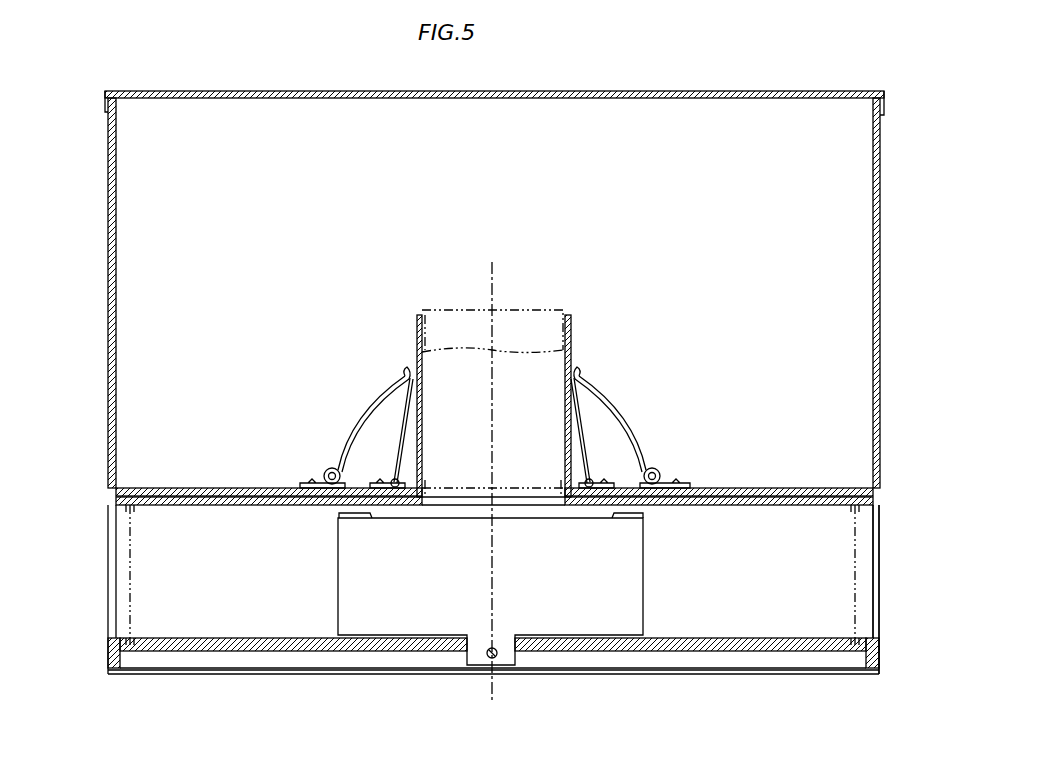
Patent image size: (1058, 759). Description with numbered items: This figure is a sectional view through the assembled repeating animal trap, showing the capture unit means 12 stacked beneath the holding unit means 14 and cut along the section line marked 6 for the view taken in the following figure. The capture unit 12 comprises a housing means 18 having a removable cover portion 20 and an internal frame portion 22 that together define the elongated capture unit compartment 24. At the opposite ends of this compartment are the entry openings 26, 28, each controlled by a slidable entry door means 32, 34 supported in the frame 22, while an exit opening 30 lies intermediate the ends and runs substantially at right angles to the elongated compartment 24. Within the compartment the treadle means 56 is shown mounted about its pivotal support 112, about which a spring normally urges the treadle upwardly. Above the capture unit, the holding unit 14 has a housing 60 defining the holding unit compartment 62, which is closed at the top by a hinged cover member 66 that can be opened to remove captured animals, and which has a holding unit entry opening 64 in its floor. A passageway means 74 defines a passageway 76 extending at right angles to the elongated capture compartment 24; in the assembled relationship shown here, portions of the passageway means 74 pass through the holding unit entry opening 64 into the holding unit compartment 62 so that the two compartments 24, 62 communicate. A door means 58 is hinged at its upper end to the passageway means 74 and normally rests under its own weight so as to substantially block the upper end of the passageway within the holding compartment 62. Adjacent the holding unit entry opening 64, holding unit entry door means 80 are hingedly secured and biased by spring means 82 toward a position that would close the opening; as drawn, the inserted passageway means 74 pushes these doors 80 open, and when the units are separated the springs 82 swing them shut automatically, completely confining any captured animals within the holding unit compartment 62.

The section line 6- 6 is at (492, 262).
The capture unit means 12 is at (650, 684).
The holding unit means 14 is at (465, 257).
The housing means 18 is at (292, 684).
The removable cover portion 20 is at (722, 676).
The internal frame portion 22 is at (797, 652).
The capture unit compartment 24 is at (773, 590).
The entry opening 26 is at (106, 583).
The entry opening 28 is at (875, 556).
The exit opening 30 is at (431, 510).
The entry door means 32 is at (130, 608).
The entry door means 34 is at (858, 606).
The treadle means 56 is at (560, 596).
The door means 58 is at (538, 308).
The housing 60 is at (106, 259).
The holding unit compartment 62 is at (727, 217).
The holding unit entry opening 64 is at (583, 448).
The cover member 66 is at (162, 91).
The passageway means 74 is at (423, 436).
The passageway 76 is at (521, 447).
The holding unit entry door means 80 is at (400, 437).
The spring means 82 is at (343, 449).
The pivotal support 112 is at (645, 516).